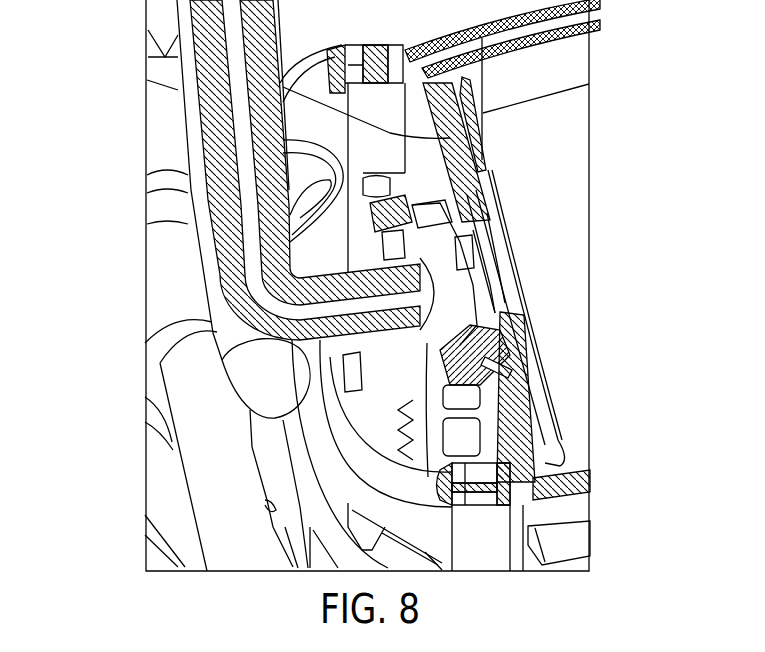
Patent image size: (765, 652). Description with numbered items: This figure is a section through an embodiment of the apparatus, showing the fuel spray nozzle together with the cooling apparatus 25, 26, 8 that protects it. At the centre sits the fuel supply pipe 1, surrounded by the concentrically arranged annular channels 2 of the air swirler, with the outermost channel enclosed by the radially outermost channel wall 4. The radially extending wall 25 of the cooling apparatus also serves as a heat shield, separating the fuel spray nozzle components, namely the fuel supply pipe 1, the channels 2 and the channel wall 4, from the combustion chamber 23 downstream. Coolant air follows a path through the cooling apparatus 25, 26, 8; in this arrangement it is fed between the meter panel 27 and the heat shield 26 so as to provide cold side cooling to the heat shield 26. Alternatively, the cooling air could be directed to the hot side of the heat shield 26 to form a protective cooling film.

The meter panel 27 is at (185, 33).
The fuel supply pipe 1 is at (258, 262).
The combustion chamber 23 is at (573, 115).
The heat shield 26 is at (483, 160).
The cooling apparatus component 8 is at (473, 186).
The annular channels 2 is at (483, 340).
The radially extending wall 25 is at (520, 357).
The radially outermost channel wall 4 is at (533, 390).